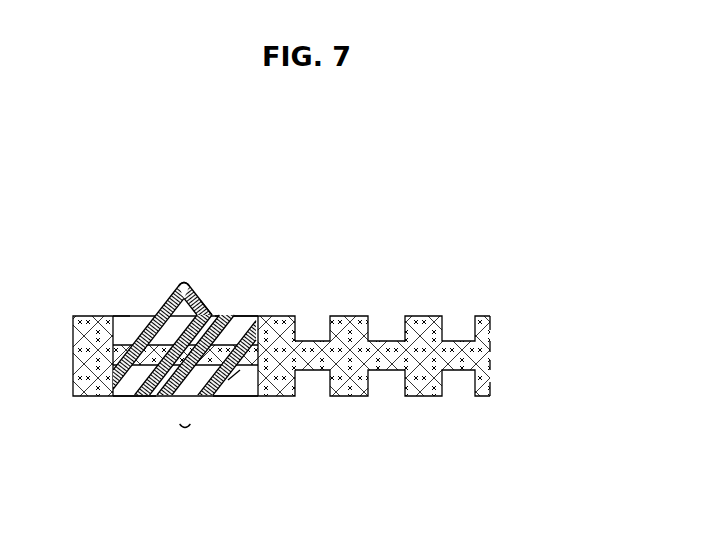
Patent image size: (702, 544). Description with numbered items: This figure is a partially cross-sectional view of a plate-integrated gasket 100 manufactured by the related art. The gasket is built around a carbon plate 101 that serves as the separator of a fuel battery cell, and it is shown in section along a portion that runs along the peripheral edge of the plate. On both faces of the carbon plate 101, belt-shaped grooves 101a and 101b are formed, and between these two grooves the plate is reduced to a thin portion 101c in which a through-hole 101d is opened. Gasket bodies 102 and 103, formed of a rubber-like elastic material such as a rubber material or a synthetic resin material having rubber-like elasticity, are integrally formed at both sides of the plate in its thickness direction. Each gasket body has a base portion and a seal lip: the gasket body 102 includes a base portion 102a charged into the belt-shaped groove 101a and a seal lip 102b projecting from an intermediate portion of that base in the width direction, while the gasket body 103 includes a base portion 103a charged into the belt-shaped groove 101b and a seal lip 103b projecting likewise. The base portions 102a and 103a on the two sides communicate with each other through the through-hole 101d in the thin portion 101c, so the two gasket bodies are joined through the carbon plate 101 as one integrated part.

The plate-integrated gasket 100 is at (398, 282).
The carbon plate 101 is at (492, 355).
The belt-shaped groove 101a is at (248, 315).
The belt-shaped groove 101b is at (129, 396).
The thin portion 101c is at (210, 397).
The through-hole 101d is at (128, 343).
The gasket body 102 is at (158, 308).
The base portion 102a is at (221, 313).
The seal lip 102b is at (181, 280).
The gasket body 103 is at (173, 432).
The base portion 103a is at (236, 391).
The seal lip 103b is at (190, 432).